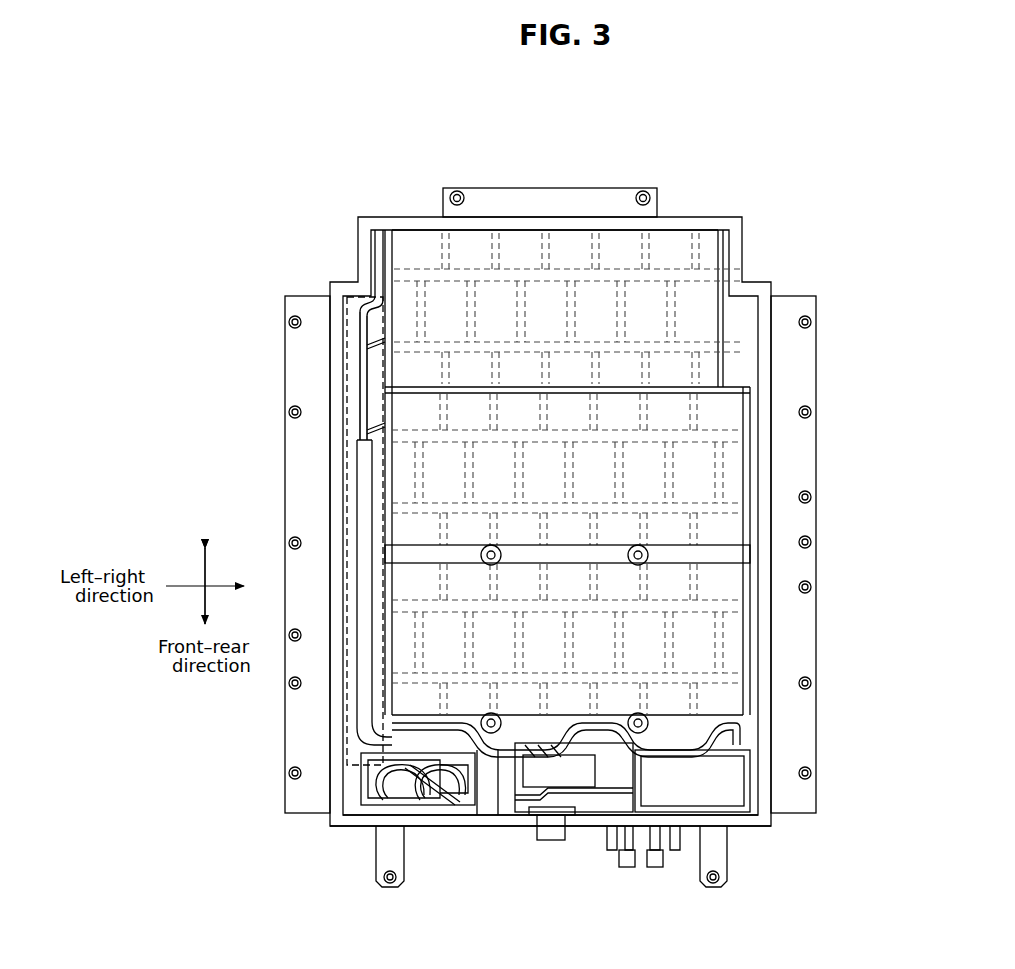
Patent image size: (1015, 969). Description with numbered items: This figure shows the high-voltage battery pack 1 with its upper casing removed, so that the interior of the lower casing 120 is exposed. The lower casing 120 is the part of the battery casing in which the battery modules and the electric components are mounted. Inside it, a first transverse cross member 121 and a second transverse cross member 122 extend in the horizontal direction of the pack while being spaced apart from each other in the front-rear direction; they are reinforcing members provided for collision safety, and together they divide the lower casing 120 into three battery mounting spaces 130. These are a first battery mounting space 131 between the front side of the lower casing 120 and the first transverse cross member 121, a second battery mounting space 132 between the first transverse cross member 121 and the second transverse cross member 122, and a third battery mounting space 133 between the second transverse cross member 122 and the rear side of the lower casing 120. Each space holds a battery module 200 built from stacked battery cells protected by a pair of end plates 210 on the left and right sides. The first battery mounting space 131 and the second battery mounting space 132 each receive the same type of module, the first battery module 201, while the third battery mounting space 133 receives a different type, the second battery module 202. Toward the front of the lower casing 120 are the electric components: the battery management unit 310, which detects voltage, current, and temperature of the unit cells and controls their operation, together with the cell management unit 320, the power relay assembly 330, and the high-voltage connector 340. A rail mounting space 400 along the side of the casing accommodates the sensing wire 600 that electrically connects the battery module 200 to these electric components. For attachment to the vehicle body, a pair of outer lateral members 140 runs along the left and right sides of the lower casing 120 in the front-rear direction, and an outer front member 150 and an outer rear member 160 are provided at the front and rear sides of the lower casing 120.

The high-voltage battery pack 1 is at (320, 268).
The lower casing 120 is at (763, 725).
The first transverse cross member 121 is at (568, 556).
The second transverse cross member 122 is at (458, 388).
The battery mounting spaces 130 is at (349, 446).
The first battery mounting space 131 is at (365, 682).
The second battery mounting space 132 is at (498, 470).
The third battery mounting space 133 is at (557, 297).
The outer lateral members 140 is at (300, 467).
The outer front member 150 is at (388, 860).
The outer rear member 160 is at (612, 200).
The battery module 200 is at (685, 445).
The first battery module 201 is at (688, 478).
The second battery module 202 is at (617, 300).
The end plates 210 is at (388, 360).
The battery management unit 310 is at (438, 780).
The cell management unit 320 is at (577, 773).
The power relay assembly 330 is at (712, 790).
The high-voltage connector 340 is at (545, 840).
The rail mounting space 400 is at (345, 748).
The sensing wire 600 is at (363, 657).